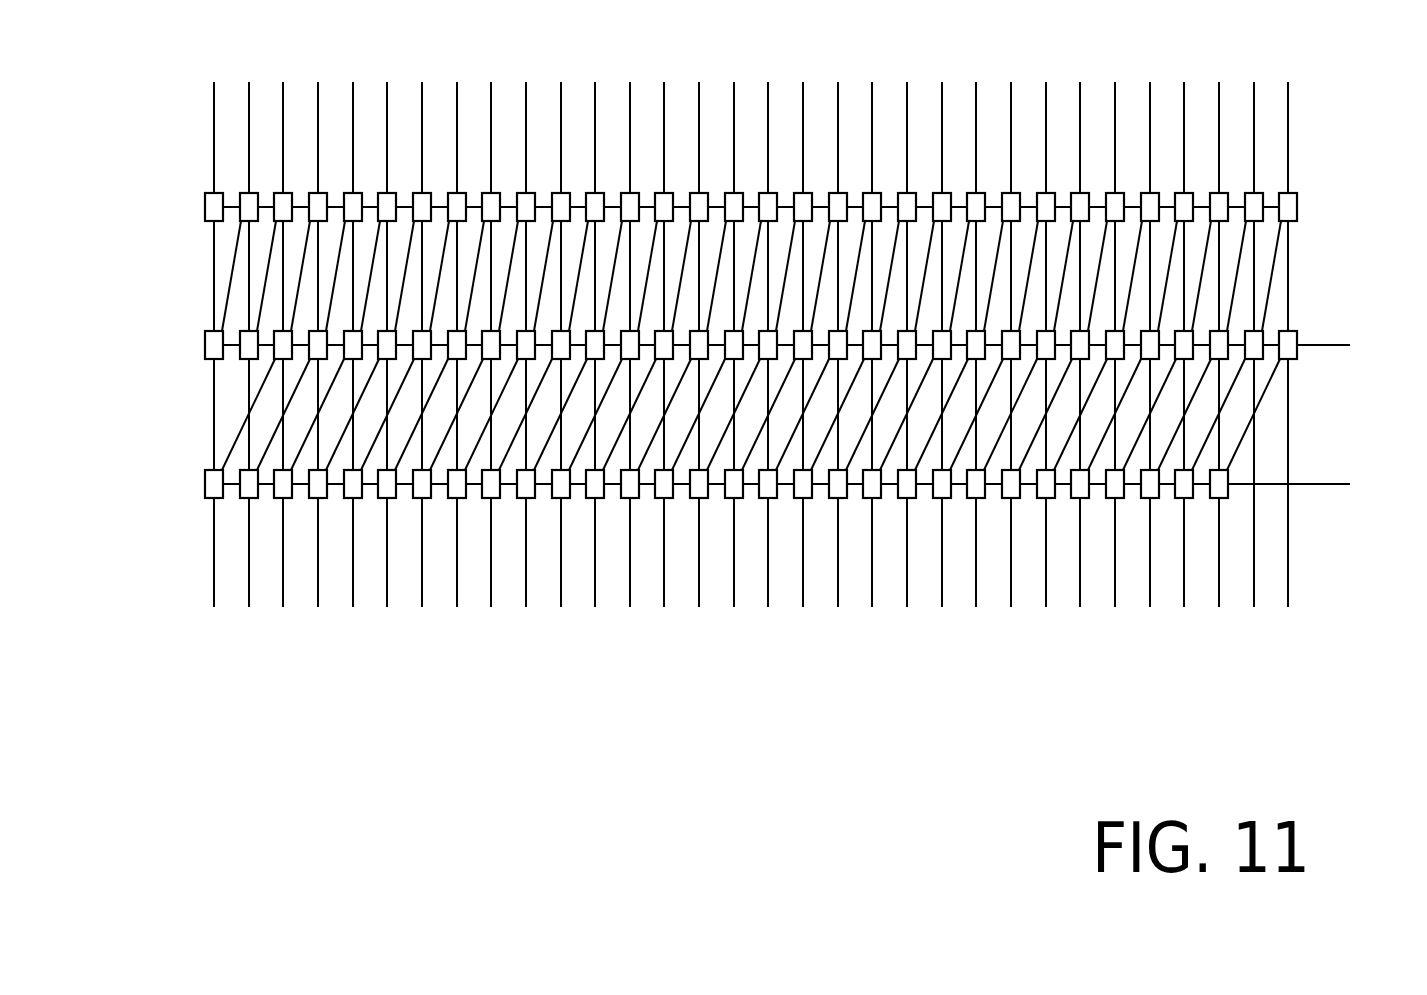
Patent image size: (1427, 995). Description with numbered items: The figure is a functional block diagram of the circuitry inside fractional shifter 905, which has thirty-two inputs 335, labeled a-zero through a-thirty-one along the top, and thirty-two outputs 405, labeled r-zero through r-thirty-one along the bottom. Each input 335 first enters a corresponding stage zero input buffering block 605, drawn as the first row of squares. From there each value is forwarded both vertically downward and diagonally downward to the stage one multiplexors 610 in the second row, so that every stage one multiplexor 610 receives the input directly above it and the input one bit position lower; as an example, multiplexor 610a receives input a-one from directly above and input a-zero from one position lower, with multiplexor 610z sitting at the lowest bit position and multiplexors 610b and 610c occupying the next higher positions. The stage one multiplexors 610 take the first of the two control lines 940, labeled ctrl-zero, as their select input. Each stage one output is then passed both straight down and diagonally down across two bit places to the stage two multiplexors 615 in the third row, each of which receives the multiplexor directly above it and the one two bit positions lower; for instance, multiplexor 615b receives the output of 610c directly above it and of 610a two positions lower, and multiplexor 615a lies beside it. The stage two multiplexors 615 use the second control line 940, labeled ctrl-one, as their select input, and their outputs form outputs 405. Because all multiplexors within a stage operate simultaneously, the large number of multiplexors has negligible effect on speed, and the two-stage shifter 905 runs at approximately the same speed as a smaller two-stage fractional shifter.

The inputs 335 is at (160, 150).
The outputs 405 is at (180, 622).
The stage 0 input buffering blocks 605 is at (180, 207).
The stage 1 multiplexors 610 is at (180, 345).
The stage 2 multiplexors 615 is at (180, 484).
The multiplexor 610a is at (1248, 363).
The multiplexor 610b is at (1227, 340).
The multiplexor 610c is at (1197, 337).
The multiplexor 610z is at (1293, 357).
The multiplexor 615a is at (1210, 498).
The multiplexor 615b is at (1175, 498).
The fractional shifter 905 is at (546, 705).
The control lines 940 is at (1302, 548).